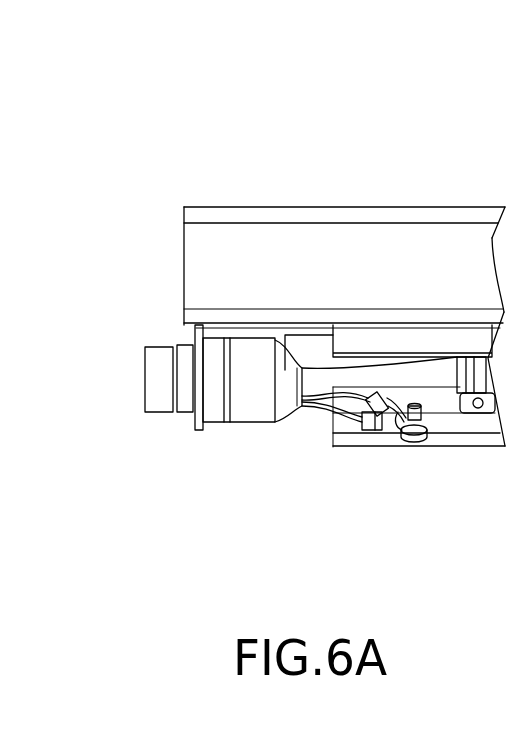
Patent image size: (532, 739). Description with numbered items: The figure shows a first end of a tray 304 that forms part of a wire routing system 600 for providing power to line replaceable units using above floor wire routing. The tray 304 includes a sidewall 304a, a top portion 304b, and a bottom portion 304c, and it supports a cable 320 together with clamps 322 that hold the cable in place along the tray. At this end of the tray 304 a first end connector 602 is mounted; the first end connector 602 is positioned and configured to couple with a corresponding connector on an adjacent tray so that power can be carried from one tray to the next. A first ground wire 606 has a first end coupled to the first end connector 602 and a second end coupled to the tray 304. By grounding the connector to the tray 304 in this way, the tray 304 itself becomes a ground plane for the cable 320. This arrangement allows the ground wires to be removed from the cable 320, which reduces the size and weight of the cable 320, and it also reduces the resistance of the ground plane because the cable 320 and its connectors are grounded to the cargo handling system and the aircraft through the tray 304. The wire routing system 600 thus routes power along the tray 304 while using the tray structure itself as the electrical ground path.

The wire routing system 600 is at (138, 156).
The tray 304 is at (361, 183).
The sidewall 304a is at (193, 272).
The top portion 304b is at (228, 216).
The bottom portion 304c is at (190, 321).
The first end connector 602 is at (200, 407).
The first ground wire 606 is at (387, 430).
The cable 320 is at (432, 375).
The clamps 322 is at (477, 412).